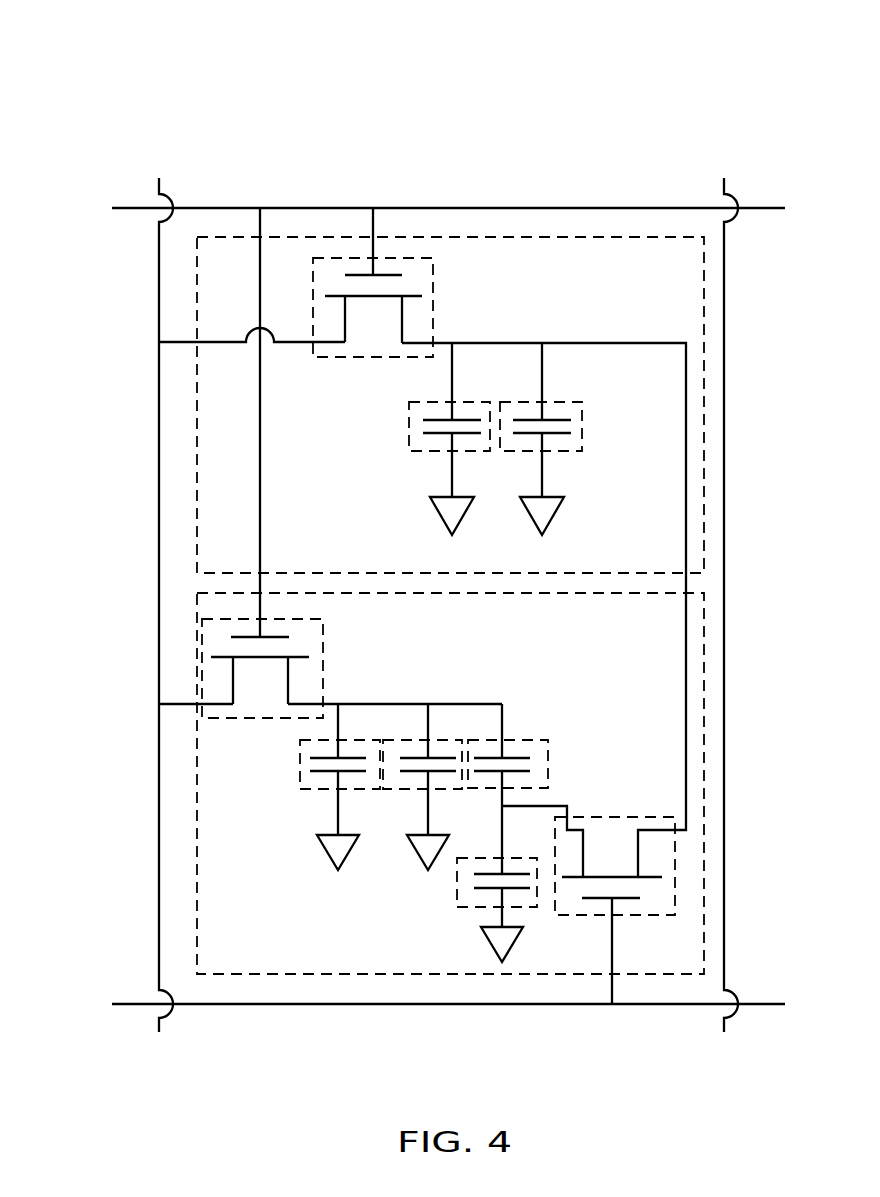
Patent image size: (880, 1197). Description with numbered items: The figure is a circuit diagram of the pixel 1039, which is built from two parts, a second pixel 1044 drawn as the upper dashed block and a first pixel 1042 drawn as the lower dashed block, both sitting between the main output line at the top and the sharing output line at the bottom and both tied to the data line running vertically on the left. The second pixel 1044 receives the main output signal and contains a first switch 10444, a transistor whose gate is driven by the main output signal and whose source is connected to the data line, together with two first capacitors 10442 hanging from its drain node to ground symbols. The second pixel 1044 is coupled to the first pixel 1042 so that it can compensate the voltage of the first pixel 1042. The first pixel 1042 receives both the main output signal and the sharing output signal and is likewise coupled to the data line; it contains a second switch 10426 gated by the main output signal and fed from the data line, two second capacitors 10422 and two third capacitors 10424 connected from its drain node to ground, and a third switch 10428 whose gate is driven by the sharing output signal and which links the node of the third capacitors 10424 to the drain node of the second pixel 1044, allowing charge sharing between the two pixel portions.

The pixel 1039 is at (709, 95).
The second pixel 1044 is at (704, 405).
The first pixel 1042 is at (704, 785).
The first switch 10444 is at (433, 308).
The first capacitors 10442 is at (409, 423).
The second switch 10426 is at (323, 668).
The second capacitors 10422 is at (300, 762).
The third capacitors 10424 is at (548, 765).
The third switch 10428 is at (575, 915).